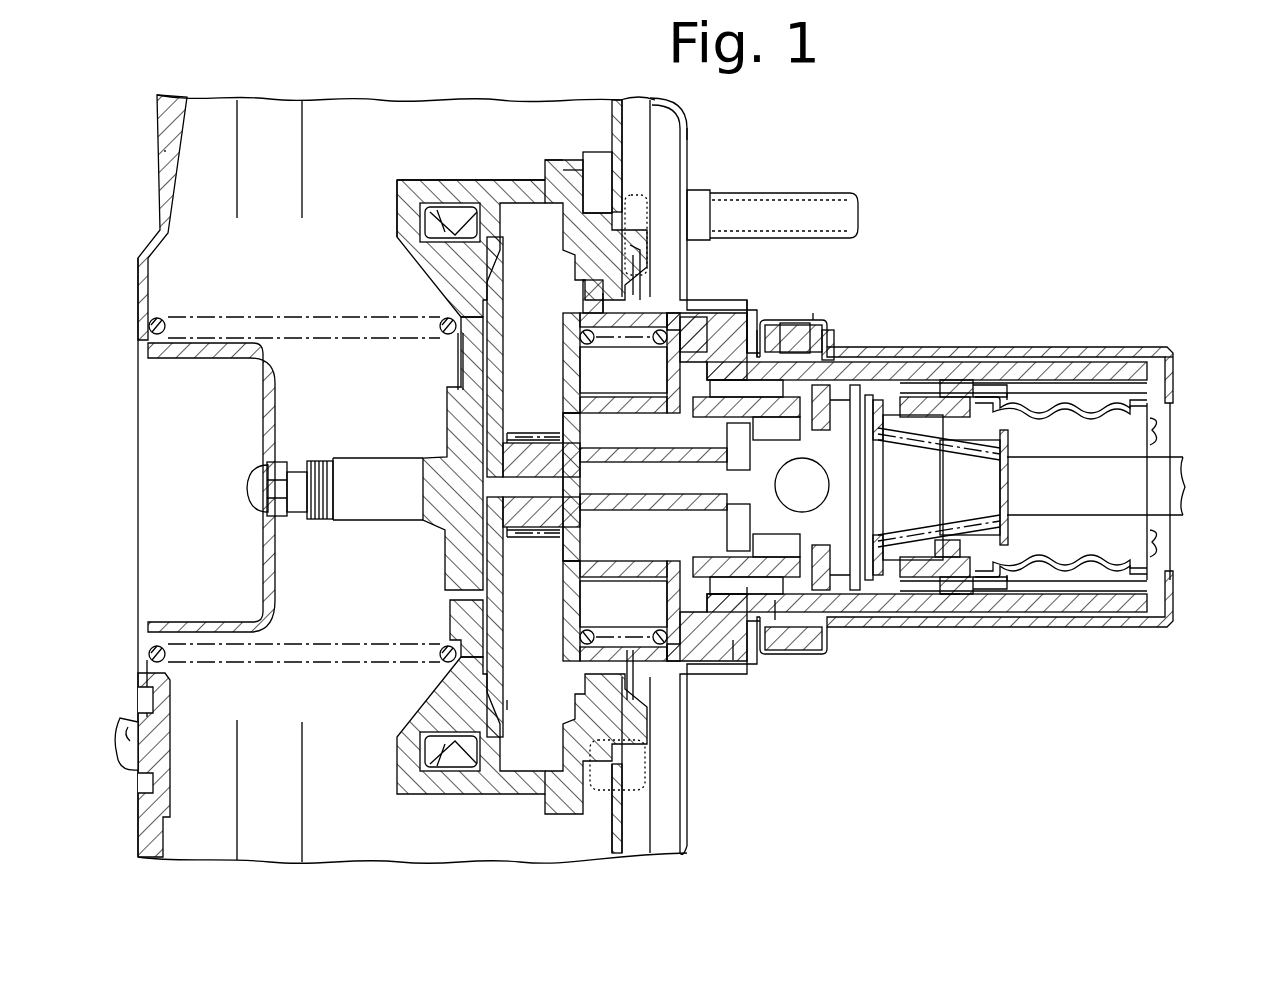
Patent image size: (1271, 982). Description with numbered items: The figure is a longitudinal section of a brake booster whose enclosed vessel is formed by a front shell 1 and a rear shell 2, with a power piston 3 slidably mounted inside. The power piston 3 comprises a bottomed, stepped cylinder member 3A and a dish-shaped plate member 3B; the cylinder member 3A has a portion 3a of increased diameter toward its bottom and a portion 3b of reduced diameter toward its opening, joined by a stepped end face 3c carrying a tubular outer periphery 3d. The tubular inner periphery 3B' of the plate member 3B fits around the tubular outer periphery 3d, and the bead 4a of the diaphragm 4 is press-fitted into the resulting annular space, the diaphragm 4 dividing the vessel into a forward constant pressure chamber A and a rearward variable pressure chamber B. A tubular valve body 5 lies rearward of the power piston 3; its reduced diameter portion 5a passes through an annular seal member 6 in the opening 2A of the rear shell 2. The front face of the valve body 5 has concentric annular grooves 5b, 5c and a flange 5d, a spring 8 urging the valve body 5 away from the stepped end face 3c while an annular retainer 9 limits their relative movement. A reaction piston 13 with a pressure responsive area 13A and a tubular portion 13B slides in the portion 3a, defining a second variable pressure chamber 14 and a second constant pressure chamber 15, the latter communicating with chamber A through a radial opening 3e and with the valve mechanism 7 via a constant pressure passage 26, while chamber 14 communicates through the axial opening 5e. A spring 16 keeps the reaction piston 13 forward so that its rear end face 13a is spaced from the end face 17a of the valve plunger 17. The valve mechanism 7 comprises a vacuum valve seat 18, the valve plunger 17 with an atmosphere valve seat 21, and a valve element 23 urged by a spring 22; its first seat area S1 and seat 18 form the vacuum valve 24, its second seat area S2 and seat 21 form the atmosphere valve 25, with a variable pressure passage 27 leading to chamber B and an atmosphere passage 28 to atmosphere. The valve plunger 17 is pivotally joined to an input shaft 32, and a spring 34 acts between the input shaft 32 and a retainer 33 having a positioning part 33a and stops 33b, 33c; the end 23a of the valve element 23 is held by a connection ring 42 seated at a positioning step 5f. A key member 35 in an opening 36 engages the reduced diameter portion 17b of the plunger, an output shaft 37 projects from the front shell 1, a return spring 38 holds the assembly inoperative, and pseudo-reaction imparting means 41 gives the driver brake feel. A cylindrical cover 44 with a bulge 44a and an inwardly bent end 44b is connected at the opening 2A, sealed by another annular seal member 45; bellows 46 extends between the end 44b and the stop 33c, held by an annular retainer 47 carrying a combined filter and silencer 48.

The front shell 1 is at (157, 187).
The constant pressure chamber A is at (330, 142).
The rear shell 2 is at (692, 150).
The variable pressure chamber B is at (669, 130).
The opening of the rear shell 2A is at (808, 337).
The power piston 3 is at (506, 176).
The portion of increased diameter 3a is at (457, 190).
The stepped cylinder member 3A is at (397, 203).
The plate member 3B is at (565, 140).
The tubular inner periphery 3B' is at (590, 167).
The portion of reduced diameter 3b is at (580, 590).
The stepped end face 3c is at (590, 793).
The tubular outer periphery 3d is at (643, 742).
The radial opening 3e is at (552, 193).
The diaphragm 4 is at (622, 150).
The bead 4a is at (630, 207).
The valve body 5 is at (700, 318).
The reduced diameter portion 5a is at (1027, 367).
The annular groove 5b is at (557, 437).
The annular groove 5c is at (643, 387).
The flange 5d is at (587, 293).
The axial opening 5e is at (707, 400).
The positioning step 5f is at (953, 592).
The annular seal member 6 is at (822, 337).
The valve mechanism 7 is at (885, 580).
The spring 8 is at (590, 312).
The annular retainer 9 is at (637, 293).
The reaction piston 13 is at (495, 727).
The rear end face 13a is at (645, 665).
The pressure responsive area 13A is at (500, 693).
The tubular portion 13B is at (577, 568).
The second variable pressure chamber 14 is at (463, 270).
The second constant pressure chamber 15 is at (520, 643).
The spring 16 is at (512, 433).
The valve plunger 17 is at (760, 517).
The end face of the valve plunger 17a is at (647, 667).
The portion of reduced diameter 17b is at (775, 600).
The vacuum valve seat 18 is at (790, 330).
The atmosphere valve seat 21 is at (866, 400).
The spring 22 is at (925, 465).
The valve element 23 is at (885, 425).
The end of the valve element 23a is at (947, 387).
The vacuum valve 24 is at (770, 478).
The atmosphere valve 25 is at (950, 560).
The constant pressure passage 26 is at (742, 303).
The variable pressure passage 27 is at (787, 660).
The atmosphere passage 28 is at (1035, 440).
The input shaft 32 is at (1075, 475).
The retainer 33 is at (945, 440).
The positioning part 33a is at (1007, 380).
The stop 33b is at (902, 395).
The stop 33c is at (1010, 393).
The spring 34 is at (985, 443).
The key member 35 is at (733, 653).
The opening 36 is at (747, 590).
The output shaft 37 is at (375, 505).
The return spring 38 is at (347, 668).
The pseudo-reaction imparting means 41 is at (455, 253).
The connection ring 42 is at (960, 380).
The cover 44 is at (1123, 347).
The bulge 44a is at (813, 320).
The end of the cover 44b is at (1173, 363).
The annular seal member 45 is at (763, 320).
The bellows 46 is at (1053, 577).
The annular retainer 47 is at (1173, 400).
The combined filter and silencer 48 is at (1170, 542).
The first seat area S1 is at (825, 377).
The second seat area S2 is at (877, 405).